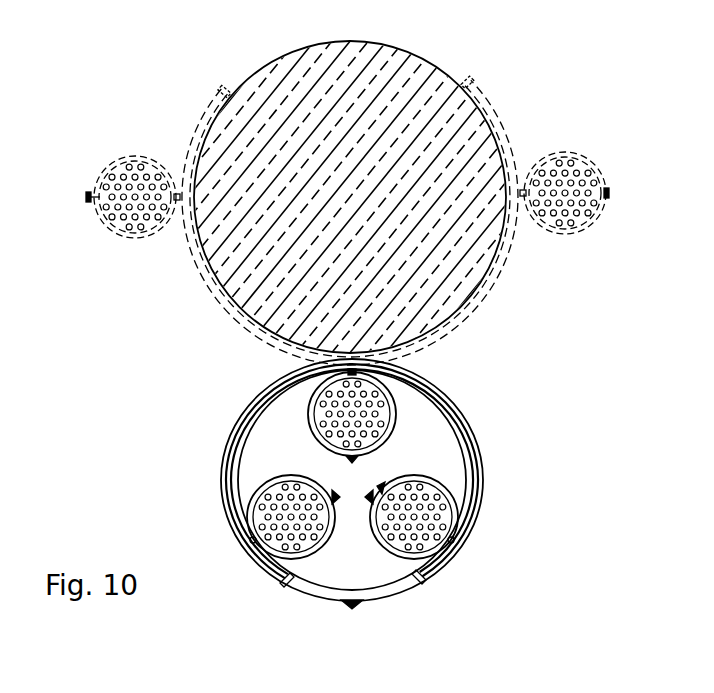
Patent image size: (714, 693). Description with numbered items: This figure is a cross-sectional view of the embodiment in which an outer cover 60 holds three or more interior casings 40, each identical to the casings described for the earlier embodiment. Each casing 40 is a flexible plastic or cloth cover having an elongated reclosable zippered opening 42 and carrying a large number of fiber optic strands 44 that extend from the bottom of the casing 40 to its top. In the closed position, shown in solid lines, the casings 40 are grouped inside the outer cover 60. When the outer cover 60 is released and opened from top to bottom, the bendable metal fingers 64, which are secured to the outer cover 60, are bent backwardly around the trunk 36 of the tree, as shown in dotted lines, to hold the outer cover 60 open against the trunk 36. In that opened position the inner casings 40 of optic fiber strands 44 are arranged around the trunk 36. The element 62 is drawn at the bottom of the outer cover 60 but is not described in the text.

The trunk 36 is at (362, 201).
The interior casing 40 is at (495, 450).
The zippered opening 42 is at (377, 490).
The fiber optic strands 44 is at (273, 492).
The outer cover 60 is at (307, 595).
The locking tab 62 is at (352, 607).
The bendable metal fingers 64 is at (473, 606).